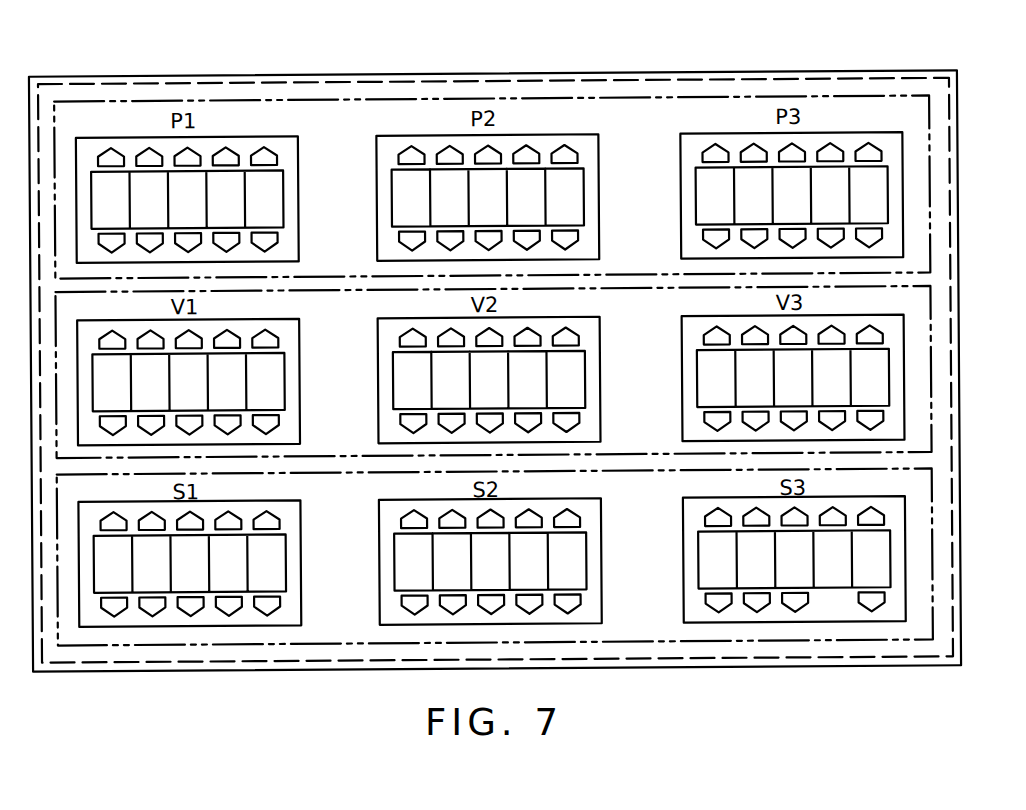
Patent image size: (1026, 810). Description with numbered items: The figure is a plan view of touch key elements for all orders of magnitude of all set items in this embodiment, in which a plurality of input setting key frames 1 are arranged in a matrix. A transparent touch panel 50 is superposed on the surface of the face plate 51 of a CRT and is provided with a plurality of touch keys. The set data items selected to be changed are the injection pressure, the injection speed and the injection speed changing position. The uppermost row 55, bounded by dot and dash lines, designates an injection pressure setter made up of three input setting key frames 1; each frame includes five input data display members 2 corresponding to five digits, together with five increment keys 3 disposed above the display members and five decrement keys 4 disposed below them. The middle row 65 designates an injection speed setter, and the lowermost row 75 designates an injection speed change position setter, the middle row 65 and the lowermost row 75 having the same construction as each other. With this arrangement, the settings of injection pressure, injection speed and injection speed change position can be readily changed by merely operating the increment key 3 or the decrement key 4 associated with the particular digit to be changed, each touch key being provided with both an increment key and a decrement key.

The input setting key frame 1 is at (223, 175).
The input data display member 2 is at (173, 147).
The increment key 3 is at (225, 99).
The decrement key 4 is at (231, 276).
The transparent touch panel 50 is at (603, 72).
The face plate 51 is at (738, 80).
The uppermost row 55 is at (930, 153).
The middle row 65 is at (932, 340).
The lowermost row 75 is at (935, 525).